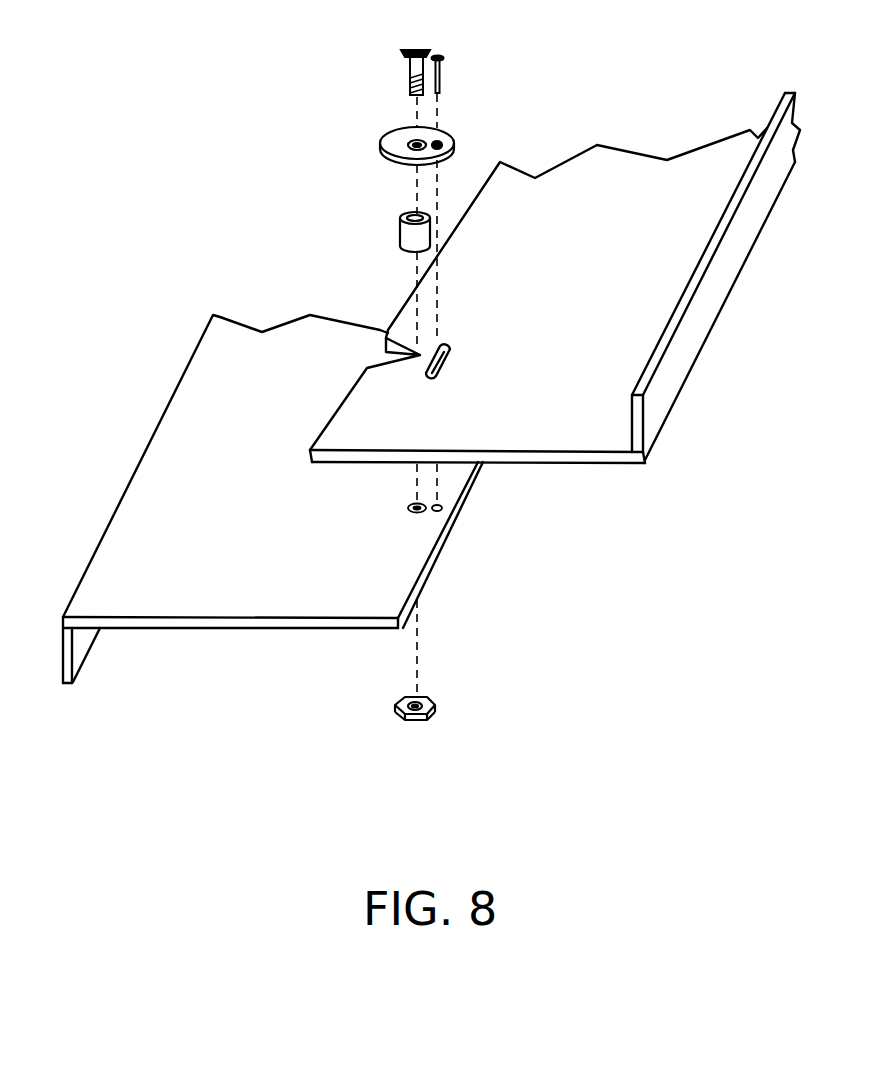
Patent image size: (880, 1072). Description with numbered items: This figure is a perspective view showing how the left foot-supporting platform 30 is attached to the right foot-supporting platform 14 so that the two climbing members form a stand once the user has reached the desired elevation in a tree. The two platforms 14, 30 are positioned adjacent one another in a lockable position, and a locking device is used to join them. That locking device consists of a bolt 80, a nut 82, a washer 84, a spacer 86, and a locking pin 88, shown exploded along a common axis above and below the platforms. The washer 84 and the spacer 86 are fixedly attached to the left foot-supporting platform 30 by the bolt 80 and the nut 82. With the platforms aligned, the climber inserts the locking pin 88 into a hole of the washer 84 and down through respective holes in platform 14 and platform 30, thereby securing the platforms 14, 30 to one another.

The right foot-supporting platform 14 is at (588, 427).
The left foot-supporting platform 30 is at (125, 577).
The bolt 80 is at (407, 73).
The nut 82 is at (417, 727).
The washer 84 is at (378, 147).
The spacer 86 is at (398, 232).
The locking pin 88 is at (452, 73).